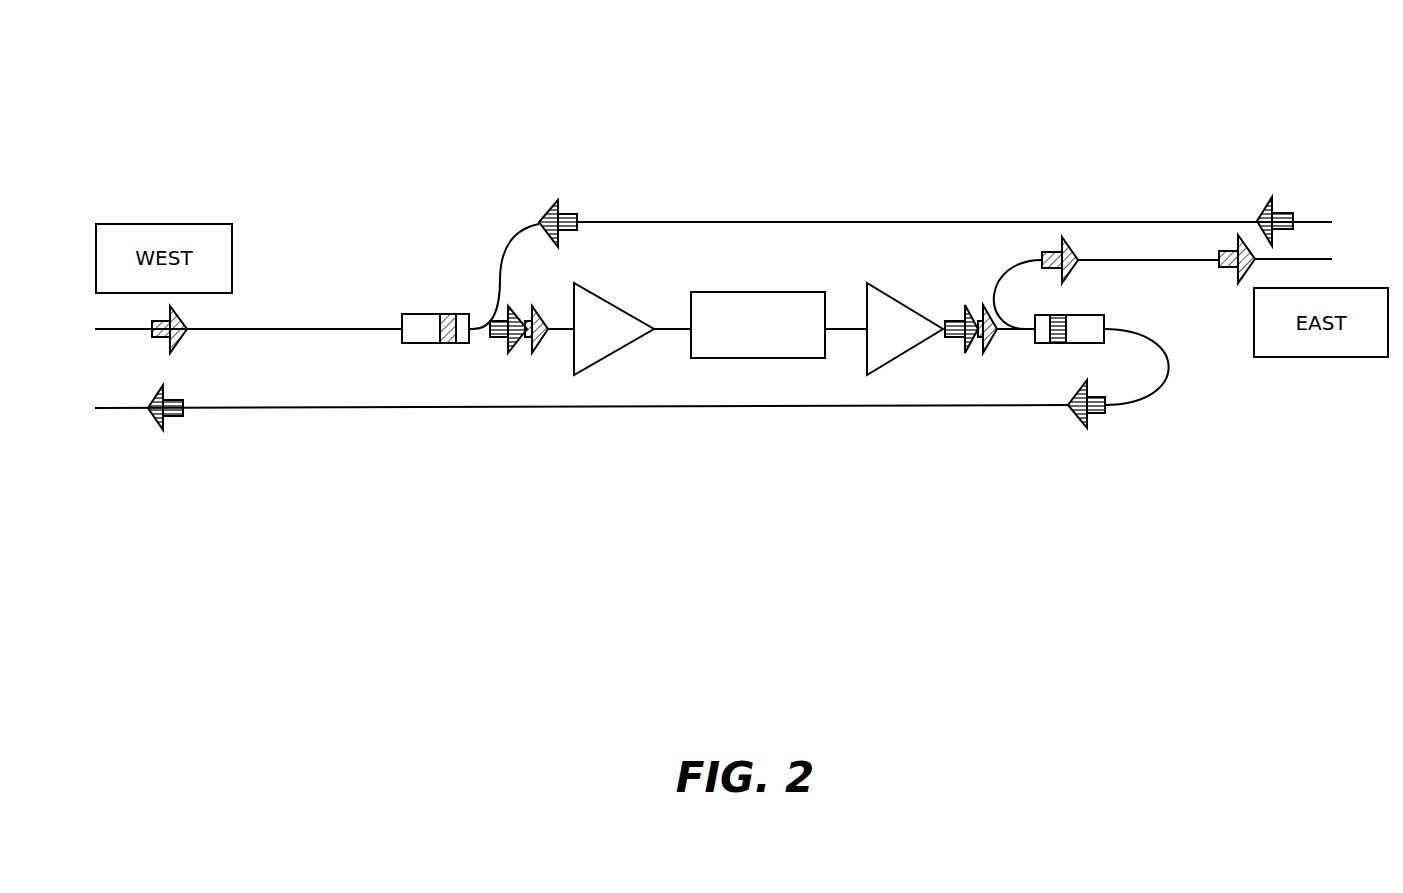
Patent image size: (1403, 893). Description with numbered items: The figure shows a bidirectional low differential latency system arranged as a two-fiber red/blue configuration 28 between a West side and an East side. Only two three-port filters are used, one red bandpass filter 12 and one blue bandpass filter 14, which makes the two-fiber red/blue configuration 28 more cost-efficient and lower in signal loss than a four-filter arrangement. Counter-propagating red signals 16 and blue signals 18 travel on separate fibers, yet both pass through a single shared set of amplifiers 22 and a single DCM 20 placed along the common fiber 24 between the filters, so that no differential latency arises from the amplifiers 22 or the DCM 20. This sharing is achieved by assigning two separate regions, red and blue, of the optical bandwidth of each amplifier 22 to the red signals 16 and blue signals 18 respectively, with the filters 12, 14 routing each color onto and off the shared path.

The red bandpass filter 12 is at (425, 314).
The blue bandpass filter 14 is at (1103, 315).
The red signals 16 is at (152, 338).
The blue signals 18 is at (152, 420).
The DCM 20 is at (758, 358).
The amplifiers 22 is at (606, 362).
The single fiber 24 is at (675, 326).
The two-fiber red/blue configuration 28 is at (765, 92).